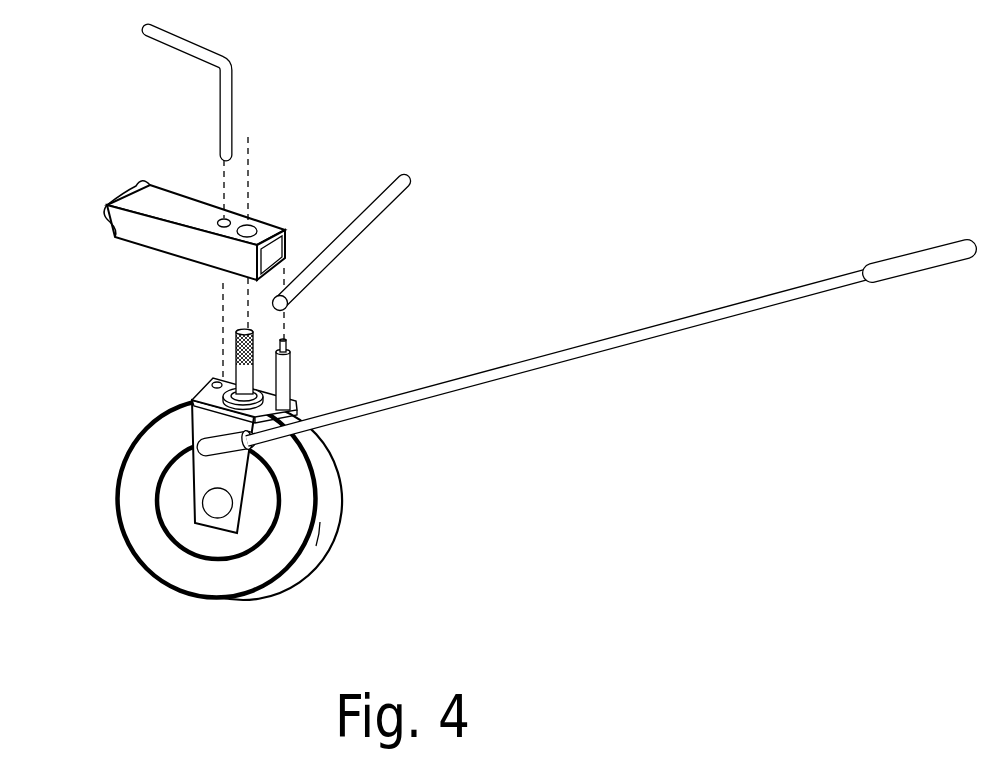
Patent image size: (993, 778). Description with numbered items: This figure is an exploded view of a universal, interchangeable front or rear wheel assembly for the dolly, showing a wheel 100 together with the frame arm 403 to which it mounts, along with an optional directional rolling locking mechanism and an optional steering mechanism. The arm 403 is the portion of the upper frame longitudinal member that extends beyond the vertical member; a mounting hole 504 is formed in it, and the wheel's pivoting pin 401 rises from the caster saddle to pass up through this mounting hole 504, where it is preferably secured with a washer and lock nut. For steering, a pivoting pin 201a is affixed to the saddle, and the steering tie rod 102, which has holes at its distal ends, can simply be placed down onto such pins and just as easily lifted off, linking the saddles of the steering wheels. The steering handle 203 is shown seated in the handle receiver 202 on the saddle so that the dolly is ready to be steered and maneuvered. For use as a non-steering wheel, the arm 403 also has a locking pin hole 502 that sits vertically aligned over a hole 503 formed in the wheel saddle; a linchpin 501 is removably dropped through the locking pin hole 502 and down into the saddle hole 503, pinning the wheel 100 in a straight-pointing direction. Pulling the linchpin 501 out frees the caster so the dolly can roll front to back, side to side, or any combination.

The universal interchangeable wheel 100 is at (232, 594).
The steering tie rod 102 is at (390, 185).
The pivoting pin 201a is at (286, 344).
The handle receiver 202 is at (220, 448).
The steering handle 203 is at (790, 292).
The wheel pivoting pin 401 is at (289, 368).
The frame arm 403 is at (163, 245).
The linchpin 501 is at (190, 48).
The locking pin hole 502 is at (221, 219).
The saddle hole 503 is at (213, 384).
The mounting hole 504 is at (251, 226).